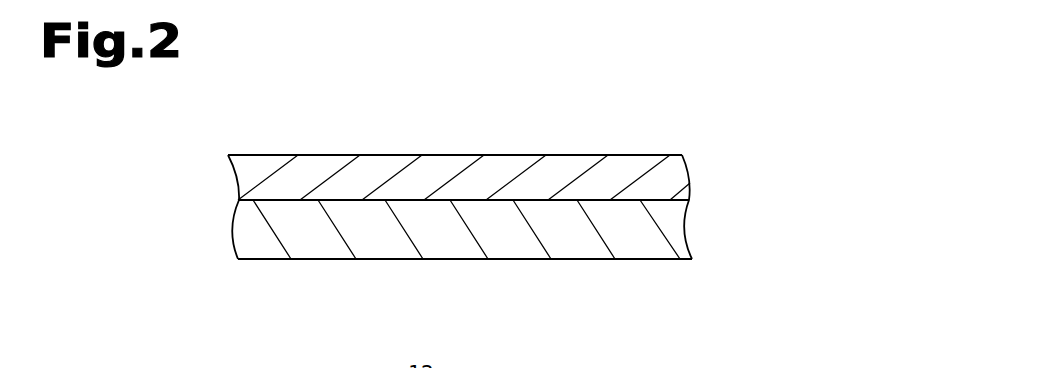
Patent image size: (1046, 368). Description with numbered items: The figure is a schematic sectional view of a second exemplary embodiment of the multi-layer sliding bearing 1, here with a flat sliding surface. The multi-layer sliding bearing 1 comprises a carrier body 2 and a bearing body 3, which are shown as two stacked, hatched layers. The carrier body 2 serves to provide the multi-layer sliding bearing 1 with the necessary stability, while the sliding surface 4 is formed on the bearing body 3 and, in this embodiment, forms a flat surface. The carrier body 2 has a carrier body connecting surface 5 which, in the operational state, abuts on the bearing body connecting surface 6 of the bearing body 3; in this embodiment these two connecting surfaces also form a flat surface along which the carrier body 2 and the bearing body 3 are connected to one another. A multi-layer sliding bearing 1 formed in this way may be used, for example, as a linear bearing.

The multi-layer sliding bearing 1 is at (787, 102).
The carrier body 2 is at (572, 240).
The bearing body 3 is at (532, 177).
The sliding surface 4 is at (345, 155).
The carrier body connecting surface 5 is at (612, 198).
The bearing body connecting surface 6 is at (290, 201).